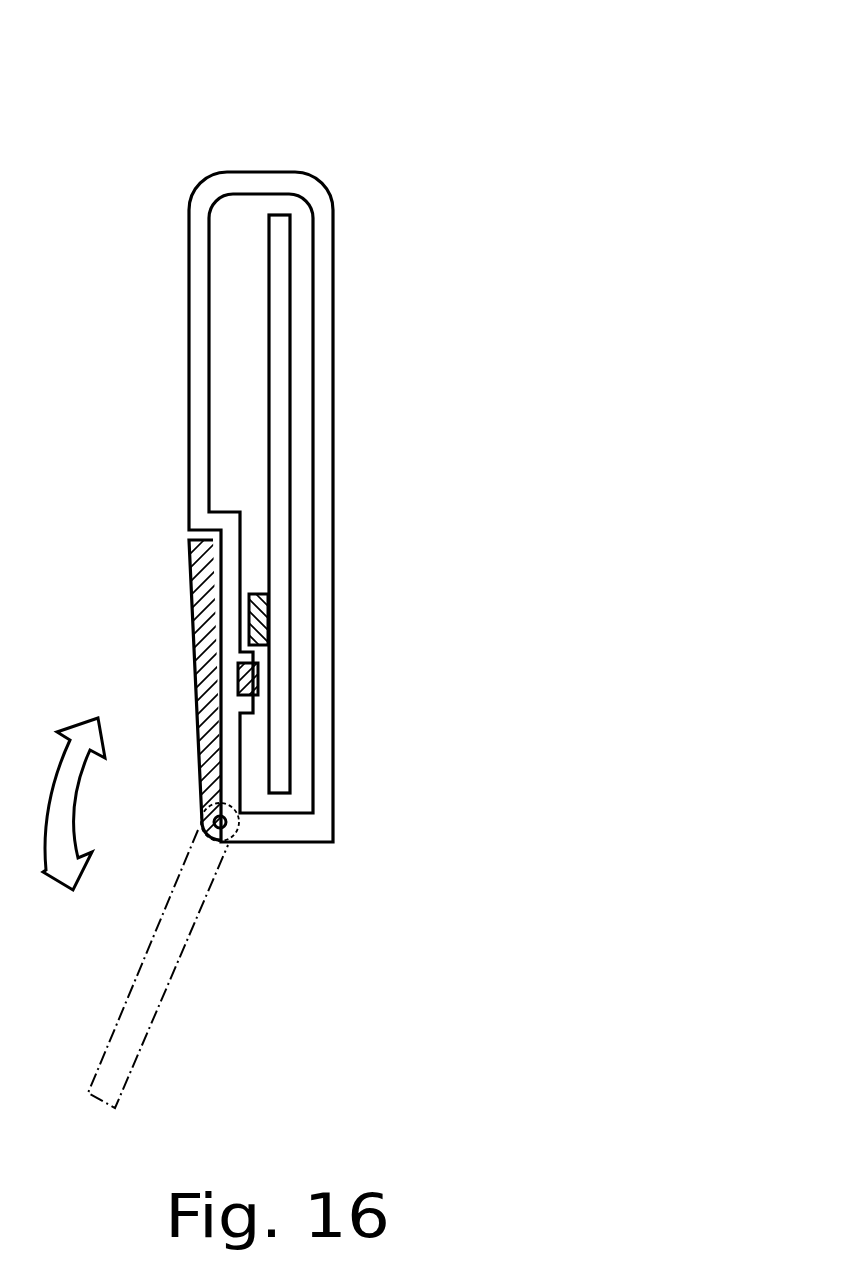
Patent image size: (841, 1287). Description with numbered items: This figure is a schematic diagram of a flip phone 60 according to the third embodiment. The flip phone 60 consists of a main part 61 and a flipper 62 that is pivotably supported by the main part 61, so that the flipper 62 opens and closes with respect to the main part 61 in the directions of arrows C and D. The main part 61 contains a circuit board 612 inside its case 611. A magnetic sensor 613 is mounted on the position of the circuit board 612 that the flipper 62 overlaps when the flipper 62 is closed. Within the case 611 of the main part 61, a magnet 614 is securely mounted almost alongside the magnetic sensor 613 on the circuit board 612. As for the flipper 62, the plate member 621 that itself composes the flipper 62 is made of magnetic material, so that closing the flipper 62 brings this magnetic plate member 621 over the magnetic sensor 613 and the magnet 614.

The flip phone 60 is at (403, 88).
The main part 61 is at (140, 194).
The case 611 is at (188, 282).
The circuit board 612 is at (267, 289).
The magnetic sensor 613 is at (253, 592).
The magnet 614 is at (258, 678).
The flipper 62 is at (156, 586).
The plate member 621 is at (190, 638).